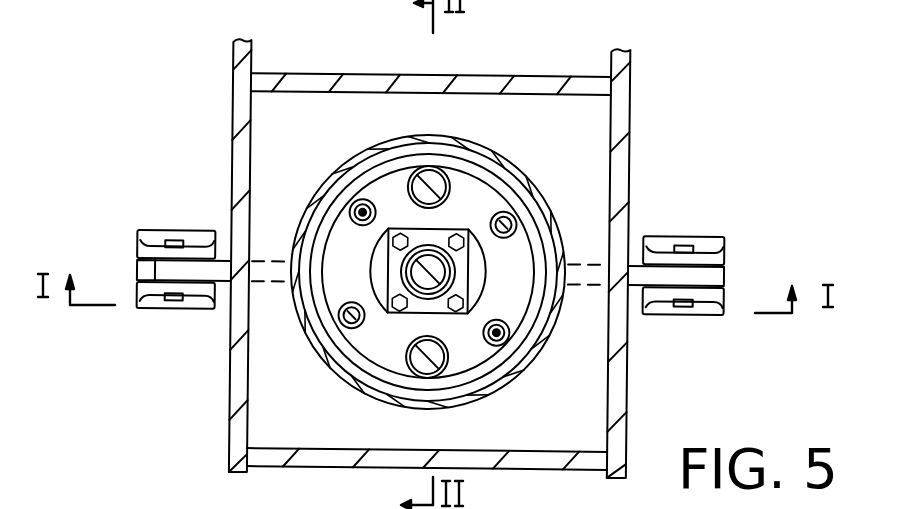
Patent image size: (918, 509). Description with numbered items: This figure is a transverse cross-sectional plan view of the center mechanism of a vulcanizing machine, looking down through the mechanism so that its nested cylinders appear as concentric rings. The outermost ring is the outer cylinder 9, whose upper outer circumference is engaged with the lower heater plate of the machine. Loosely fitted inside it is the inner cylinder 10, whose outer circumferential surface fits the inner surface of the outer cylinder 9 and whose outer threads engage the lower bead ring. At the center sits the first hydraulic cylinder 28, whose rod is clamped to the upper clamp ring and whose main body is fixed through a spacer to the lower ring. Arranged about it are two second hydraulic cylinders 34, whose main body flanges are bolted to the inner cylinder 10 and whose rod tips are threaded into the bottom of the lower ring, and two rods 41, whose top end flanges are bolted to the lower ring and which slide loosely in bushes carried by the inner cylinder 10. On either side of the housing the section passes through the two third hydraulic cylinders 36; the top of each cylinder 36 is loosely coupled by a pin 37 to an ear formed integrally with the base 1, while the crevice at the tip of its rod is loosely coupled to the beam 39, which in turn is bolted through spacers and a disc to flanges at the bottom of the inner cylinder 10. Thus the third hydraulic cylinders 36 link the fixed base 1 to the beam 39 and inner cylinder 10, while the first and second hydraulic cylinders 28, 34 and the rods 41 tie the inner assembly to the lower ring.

The base 1 is at (495, 77).
The outer cylinder 9 is at (537, 356).
The inner cylinder 10 is at (506, 386).
The first hydraulic cylinder 28 is at (462, 257).
The second hydraulic cylinders 34 is at (511, 217).
The third hydraulic cylinders 36 is at (157, 310).
The pins 37 is at (172, 236).
The beam 39 is at (165, 270).
The rods 41 is at (446, 176).